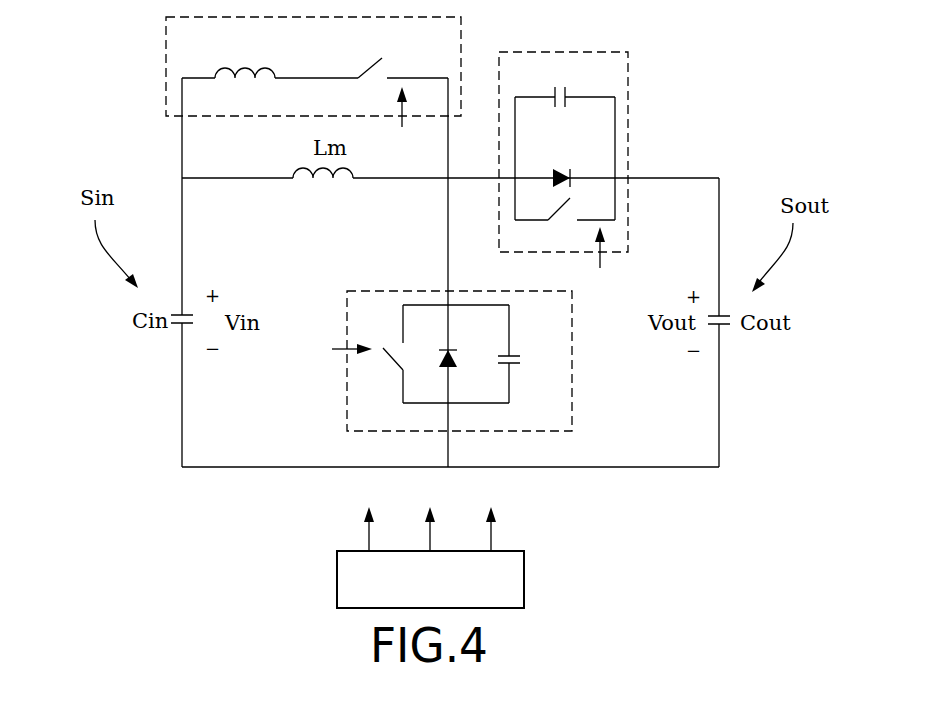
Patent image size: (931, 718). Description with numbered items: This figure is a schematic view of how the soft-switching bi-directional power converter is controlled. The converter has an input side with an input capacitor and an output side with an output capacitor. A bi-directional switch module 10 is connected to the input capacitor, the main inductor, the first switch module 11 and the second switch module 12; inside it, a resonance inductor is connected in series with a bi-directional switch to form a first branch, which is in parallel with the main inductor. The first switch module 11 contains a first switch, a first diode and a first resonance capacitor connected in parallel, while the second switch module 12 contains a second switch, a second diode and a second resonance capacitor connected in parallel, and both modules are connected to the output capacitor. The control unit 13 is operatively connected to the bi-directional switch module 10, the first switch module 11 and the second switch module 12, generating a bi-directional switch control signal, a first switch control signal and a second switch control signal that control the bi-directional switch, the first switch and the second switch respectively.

The bi-directional switch module 10 is at (180, 47).
The first switch module 11 is at (545, 418).
The second switch module 12 is at (627, 65).
The control unit 13 is at (513, 575).